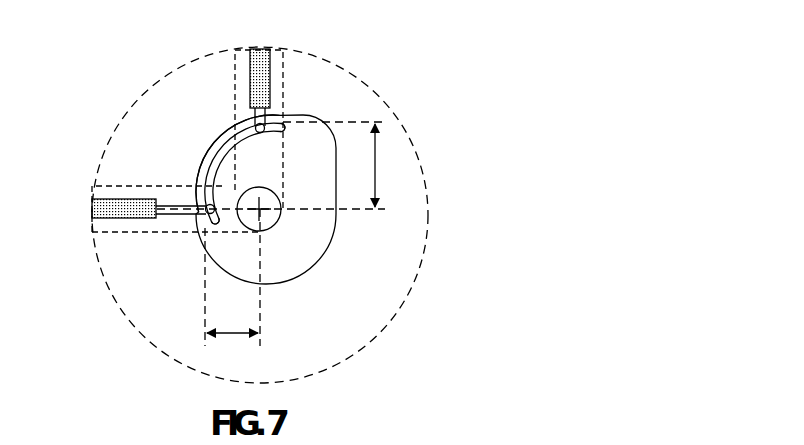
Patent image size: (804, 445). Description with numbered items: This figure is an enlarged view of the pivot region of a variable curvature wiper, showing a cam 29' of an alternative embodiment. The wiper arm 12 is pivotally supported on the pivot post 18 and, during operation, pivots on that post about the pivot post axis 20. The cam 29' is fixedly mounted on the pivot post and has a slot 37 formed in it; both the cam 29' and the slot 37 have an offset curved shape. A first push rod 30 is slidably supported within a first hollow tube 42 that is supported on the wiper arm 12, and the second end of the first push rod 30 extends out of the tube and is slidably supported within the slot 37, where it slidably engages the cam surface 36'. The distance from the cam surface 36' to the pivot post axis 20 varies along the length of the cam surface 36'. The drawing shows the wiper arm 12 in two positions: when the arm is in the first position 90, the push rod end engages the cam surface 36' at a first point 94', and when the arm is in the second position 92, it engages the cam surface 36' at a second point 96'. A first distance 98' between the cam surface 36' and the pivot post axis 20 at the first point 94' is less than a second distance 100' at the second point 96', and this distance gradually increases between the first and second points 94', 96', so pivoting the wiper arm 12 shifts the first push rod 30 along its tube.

The wiper arm 12 is at (240, 60).
The pivot post 18 is at (266, 210).
The pivot post axis 20 is at (268, 213).
The cam 29' is at (343, 279).
The first push rod 30 is at (254, 112).
The cam surface 36' is at (211, 173).
The slot 37 is at (227, 158).
The first hollow tube 42 is at (250, 79).
The first position 90 is at (102, 240).
The second position 92 is at (284, 82).
The first point 94' is at (183, 258).
The second point 96' is at (350, 98).
The first distance 98' is at (198, 362).
The second distance 100' is at (428, 165).